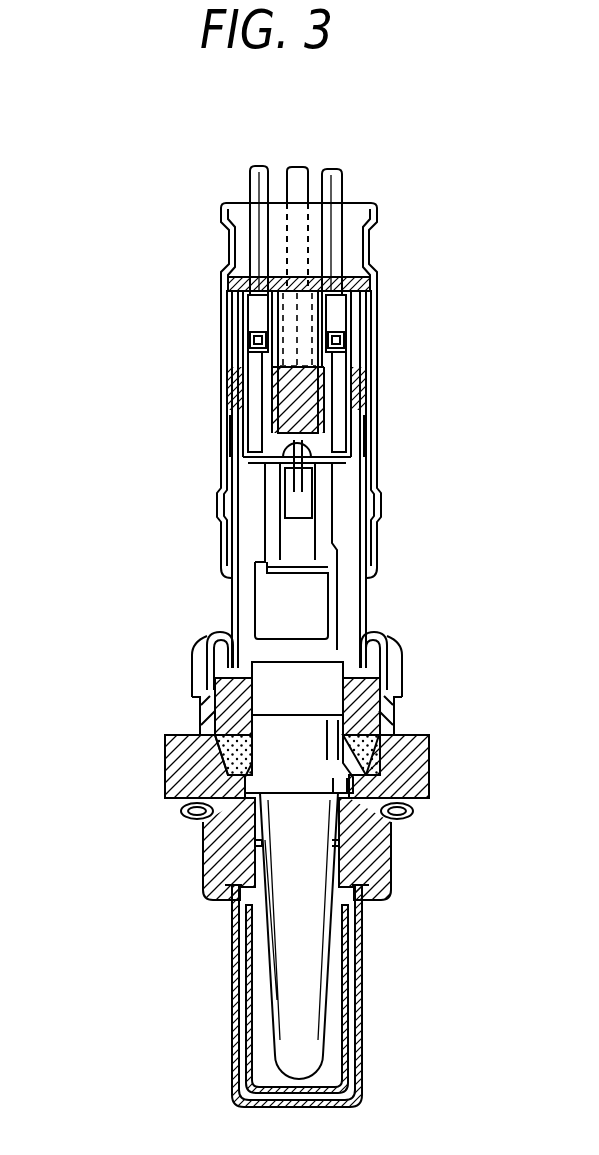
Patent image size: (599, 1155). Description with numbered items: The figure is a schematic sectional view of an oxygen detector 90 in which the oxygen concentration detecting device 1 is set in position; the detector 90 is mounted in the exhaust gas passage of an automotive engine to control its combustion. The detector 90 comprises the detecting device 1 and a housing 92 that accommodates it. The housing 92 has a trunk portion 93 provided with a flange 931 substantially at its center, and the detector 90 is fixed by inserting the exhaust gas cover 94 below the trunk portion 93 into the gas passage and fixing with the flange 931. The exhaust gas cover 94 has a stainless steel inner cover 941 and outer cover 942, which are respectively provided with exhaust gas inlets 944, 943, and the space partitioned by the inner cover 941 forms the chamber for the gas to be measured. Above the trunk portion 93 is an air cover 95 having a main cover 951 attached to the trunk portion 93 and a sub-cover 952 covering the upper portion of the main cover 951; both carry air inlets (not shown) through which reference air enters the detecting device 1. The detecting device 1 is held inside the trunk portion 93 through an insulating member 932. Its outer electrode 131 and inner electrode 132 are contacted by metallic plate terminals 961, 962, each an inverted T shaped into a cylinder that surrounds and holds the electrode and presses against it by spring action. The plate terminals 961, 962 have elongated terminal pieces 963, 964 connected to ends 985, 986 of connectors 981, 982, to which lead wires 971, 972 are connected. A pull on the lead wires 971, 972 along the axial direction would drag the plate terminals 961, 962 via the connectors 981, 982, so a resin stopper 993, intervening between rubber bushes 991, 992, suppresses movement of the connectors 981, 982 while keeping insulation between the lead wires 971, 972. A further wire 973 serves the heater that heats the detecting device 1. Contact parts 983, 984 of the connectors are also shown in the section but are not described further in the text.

The oxygen detector 90 is at (306, 128).
The lead wire 971 is at (257, 190).
The lead wire 972 is at (338, 192).
The wire for the heater 973 is at (298, 183).
The rubber bush 991 is at (357, 217).
The stopper 993 is at (280, 277).
The air cover 95 is at (390, 459).
The main cover 951 is at (224, 590).
The sub-cover 952 is at (207, 451).
The connector 981 is at (226, 339).
The connector 982 is at (364, 357).
The upper contact 983 is at (256, 312).
The upper contact 984 is at (345, 316).
The end of connector 985 is at (253, 373).
The rubber bush 992 is at (357, 338).
The end of connector 986 is at (353, 387).
The terminal piece 963 is at (262, 490).
The terminal piece 964 is at (333, 523).
The plate terminal 961 is at (268, 608).
The inner electrode 132 is at (339, 615).
The plate terminal 962 is at (330, 690).
The oxygen concentration detecting device 1 is at (346, 997).
The outer electrode 131 is at (250, 707).
The housing 92 is at (430, 726).
The trunk portion 93 is at (192, 668).
The flange 931 is at (413, 772).
The insulating member 932 is at (204, 868).
The exhaust gas cover 94 is at (220, 1040).
The inner cover 941 is at (345, 1068).
The outer cover 942 is at (361, 1030).
The exhaust gas inlet 943 is at (232, 980).
The exhaust gas inlet 944 is at (346, 935).